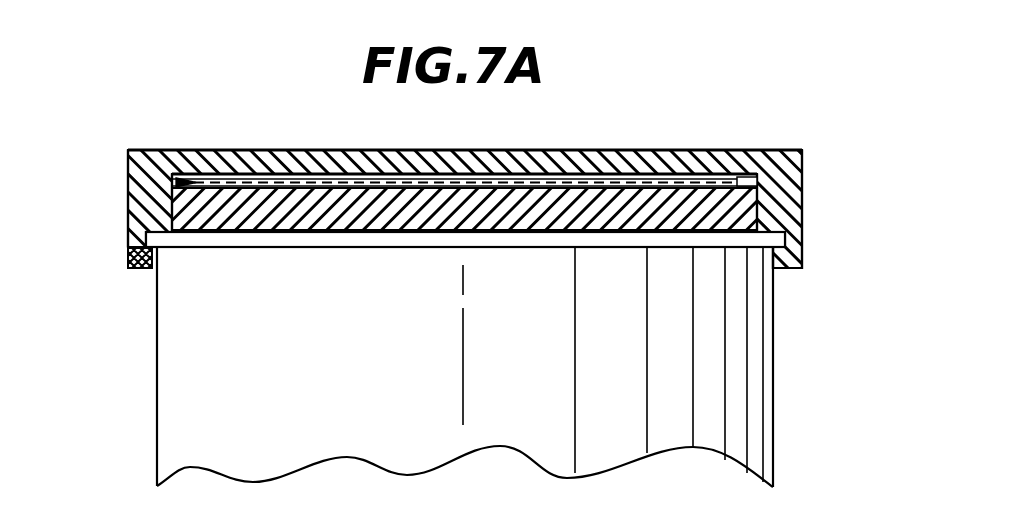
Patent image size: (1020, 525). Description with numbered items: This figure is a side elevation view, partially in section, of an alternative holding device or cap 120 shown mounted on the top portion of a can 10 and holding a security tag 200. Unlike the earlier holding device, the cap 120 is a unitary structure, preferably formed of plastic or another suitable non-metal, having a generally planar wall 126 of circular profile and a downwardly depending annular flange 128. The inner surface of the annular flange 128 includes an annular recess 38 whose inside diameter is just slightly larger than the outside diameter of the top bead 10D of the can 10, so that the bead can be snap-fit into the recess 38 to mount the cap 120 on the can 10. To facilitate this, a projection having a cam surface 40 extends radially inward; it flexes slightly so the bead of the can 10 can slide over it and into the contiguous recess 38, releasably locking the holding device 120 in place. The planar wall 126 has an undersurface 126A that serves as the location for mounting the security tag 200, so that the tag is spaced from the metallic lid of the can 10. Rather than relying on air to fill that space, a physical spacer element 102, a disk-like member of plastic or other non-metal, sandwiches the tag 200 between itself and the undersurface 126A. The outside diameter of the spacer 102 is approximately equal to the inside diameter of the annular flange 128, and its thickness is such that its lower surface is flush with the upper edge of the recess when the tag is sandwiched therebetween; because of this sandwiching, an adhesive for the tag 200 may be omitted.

The holding device or cap 120 is at (733, 117).
The planar wall 126 is at (645, 155).
The annular flange 128 is at (793, 203).
The security tag 200 is at (153, 163).
The undersurface 126A is at (758, 192).
The spacer element 102 is at (300, 232).
The top bead 10D is at (533, 240).
The annular recess 38 is at (128, 262).
The cam surface 40 is at (155, 268).
The can 10 is at (148, 364).